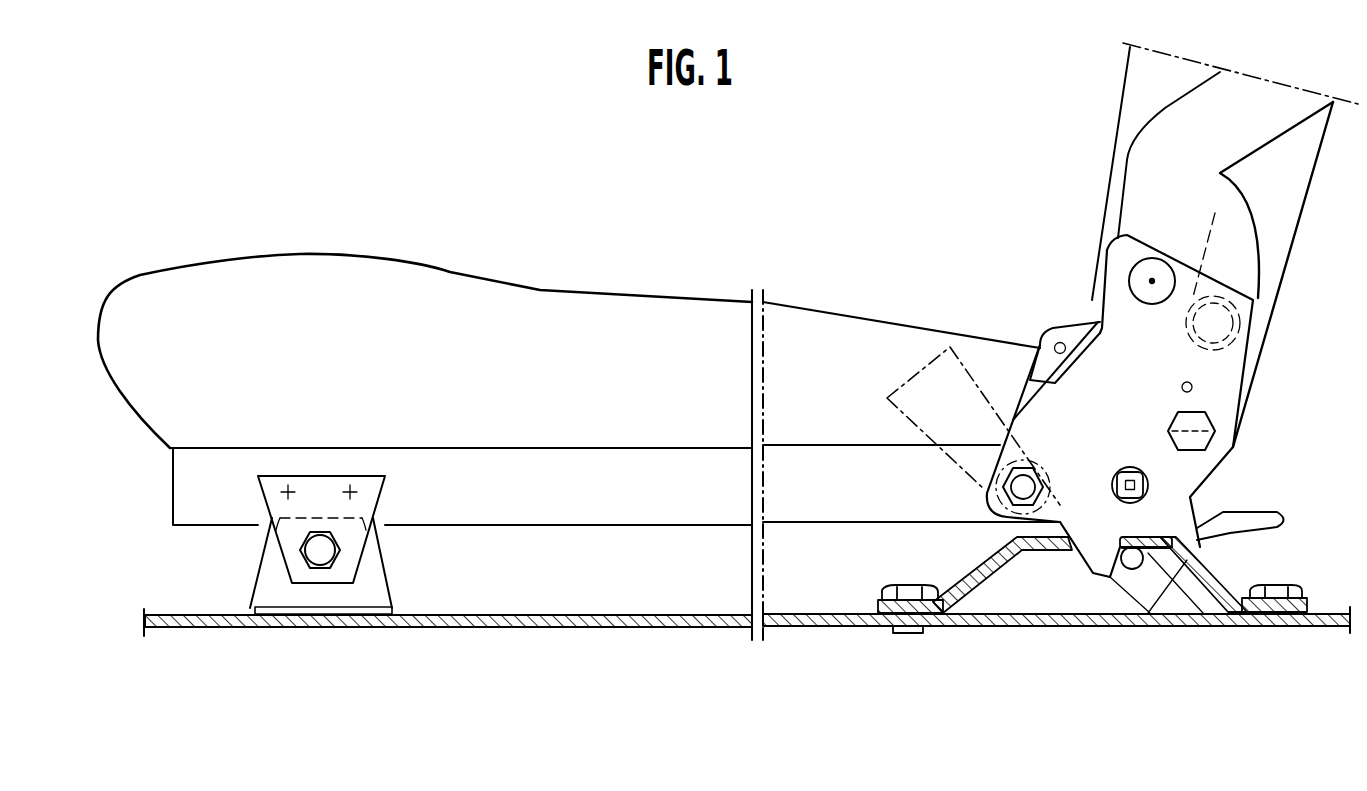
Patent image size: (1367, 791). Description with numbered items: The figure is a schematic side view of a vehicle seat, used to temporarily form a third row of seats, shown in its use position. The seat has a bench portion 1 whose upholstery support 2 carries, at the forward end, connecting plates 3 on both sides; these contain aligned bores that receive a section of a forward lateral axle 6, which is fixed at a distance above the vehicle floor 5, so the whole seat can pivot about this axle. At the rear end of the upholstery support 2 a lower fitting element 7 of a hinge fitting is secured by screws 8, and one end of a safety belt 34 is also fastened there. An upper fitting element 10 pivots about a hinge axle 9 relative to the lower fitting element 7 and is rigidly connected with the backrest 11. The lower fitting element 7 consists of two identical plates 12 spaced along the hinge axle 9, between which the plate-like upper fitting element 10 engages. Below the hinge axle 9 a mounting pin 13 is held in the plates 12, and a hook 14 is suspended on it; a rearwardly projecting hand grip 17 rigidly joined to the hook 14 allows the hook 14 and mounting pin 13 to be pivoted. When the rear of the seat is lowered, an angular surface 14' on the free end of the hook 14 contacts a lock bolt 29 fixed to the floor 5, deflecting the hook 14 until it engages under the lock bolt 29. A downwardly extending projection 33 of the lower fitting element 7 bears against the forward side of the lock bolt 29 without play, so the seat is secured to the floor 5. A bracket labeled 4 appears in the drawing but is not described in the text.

The bench portion 1 is at (556, 252).
The upholstery support 2 is at (645, 503).
The connecting plates 3 is at (380, 512).
The toe bracket 4 is at (263, 572).
The vehicle floor 5 is at (523, 627).
The forward lateral axle 6 is at (322, 557).
The lower fitting element 7 is at (1252, 375).
The screws 8 is at (1200, 437).
The hinge axle 9 is at (1150, 282).
The upper fitting element 10 is at (1268, 240).
The backrest 11 is at (1128, 72).
The plates 12 is at (1180, 472).
The mounting pin 13 is at (1113, 478).
The hook 14 is at (1192, 555).
The angular surface 14' is at (1183, 625).
The hand grip 17 is at (1273, 527).
The lock bolt 29 is at (1207, 613).
The projection 33 is at (1103, 557).
The safety belt 34 is at (910, 380).